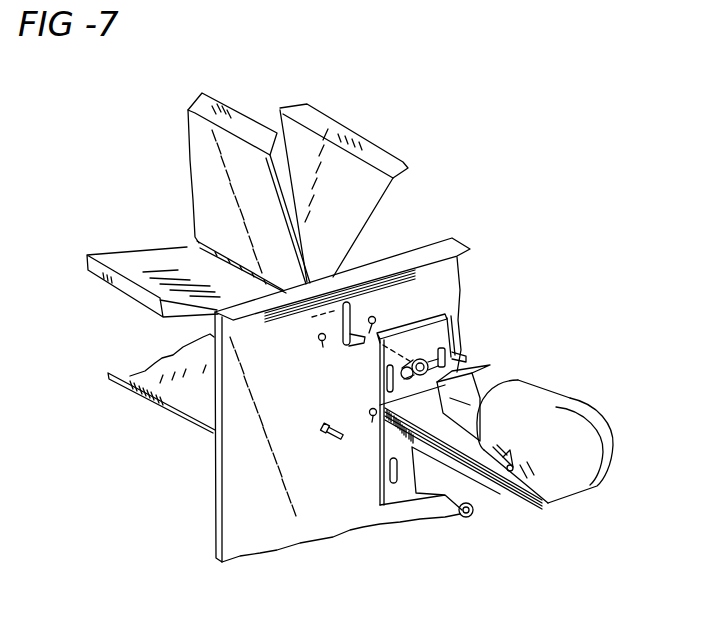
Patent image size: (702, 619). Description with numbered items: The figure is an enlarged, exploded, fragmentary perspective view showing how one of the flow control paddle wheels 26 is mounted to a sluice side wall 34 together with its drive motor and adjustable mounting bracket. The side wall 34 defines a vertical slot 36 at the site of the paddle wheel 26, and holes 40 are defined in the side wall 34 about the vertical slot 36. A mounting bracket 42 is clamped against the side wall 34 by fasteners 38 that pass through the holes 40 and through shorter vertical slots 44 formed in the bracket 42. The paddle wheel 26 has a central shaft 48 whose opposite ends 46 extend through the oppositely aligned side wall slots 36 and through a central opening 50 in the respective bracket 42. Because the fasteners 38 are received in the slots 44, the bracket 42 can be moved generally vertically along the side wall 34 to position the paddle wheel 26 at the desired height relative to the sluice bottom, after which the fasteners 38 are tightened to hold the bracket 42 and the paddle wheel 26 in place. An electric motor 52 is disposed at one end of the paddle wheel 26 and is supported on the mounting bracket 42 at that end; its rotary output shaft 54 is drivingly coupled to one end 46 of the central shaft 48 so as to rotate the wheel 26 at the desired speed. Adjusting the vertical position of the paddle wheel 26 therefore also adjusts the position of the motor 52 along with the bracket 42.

The paddle wheel 26 is at (383, 184).
The side wall 34 is at (462, 283).
The vertical slot 36 is at (355, 307).
The fastener 38 is at (400, 522).
The hole 40 is at (367, 340).
The mounting bracket 42 is at (500, 493).
The shorter vertical slot 44 is at (391, 478).
The end of central shaft 46 is at (445, 308).
The central shaft 48 is at (183, 248).
The central opening 50 is at (463, 350).
The electric motor 52 is at (565, 405).
The rotary output shaft 54 is at (462, 369).